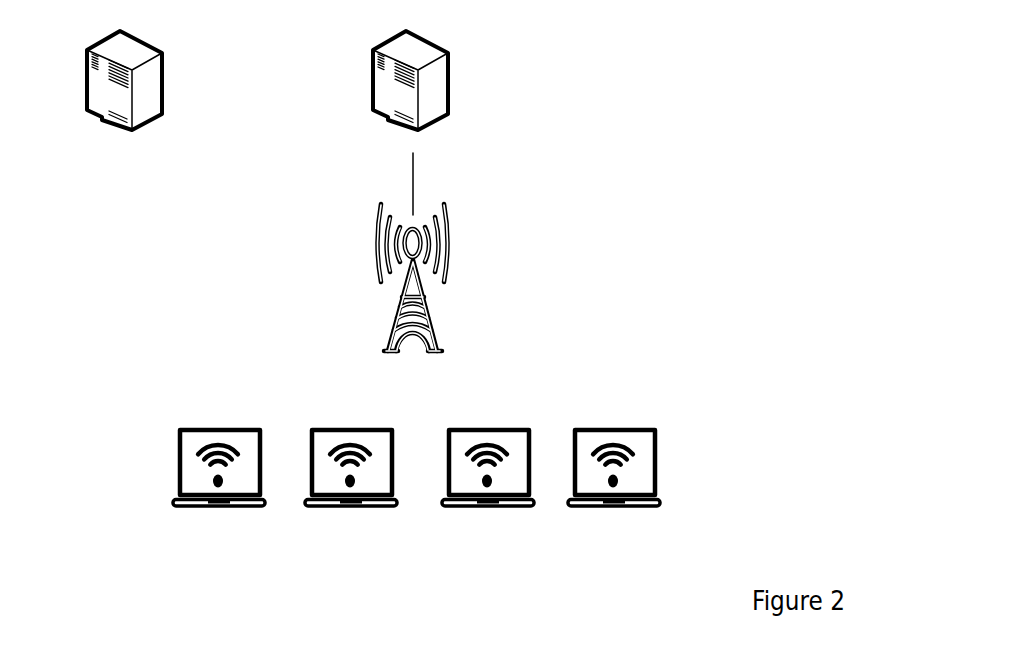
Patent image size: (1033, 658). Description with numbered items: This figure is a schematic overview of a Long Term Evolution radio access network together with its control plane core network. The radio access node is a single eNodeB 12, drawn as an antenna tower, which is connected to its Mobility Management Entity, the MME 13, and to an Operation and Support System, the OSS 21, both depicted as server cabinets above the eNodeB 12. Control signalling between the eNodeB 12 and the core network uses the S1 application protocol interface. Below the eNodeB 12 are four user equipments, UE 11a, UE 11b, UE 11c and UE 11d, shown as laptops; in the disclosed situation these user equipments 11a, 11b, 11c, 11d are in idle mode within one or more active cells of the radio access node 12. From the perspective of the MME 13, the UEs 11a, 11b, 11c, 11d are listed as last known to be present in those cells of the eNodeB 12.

The Operation and Support System 21 is at (147, 77).
The Mobility Management Entity 13 is at (440, 77).
The eNodeB 12 is at (417, 307).
The user equipment 11a is at (252, 440).
The user equipment 11b is at (372, 440).
The user equipment 11c is at (475, 440).
The user equipment 11d is at (623, 427).